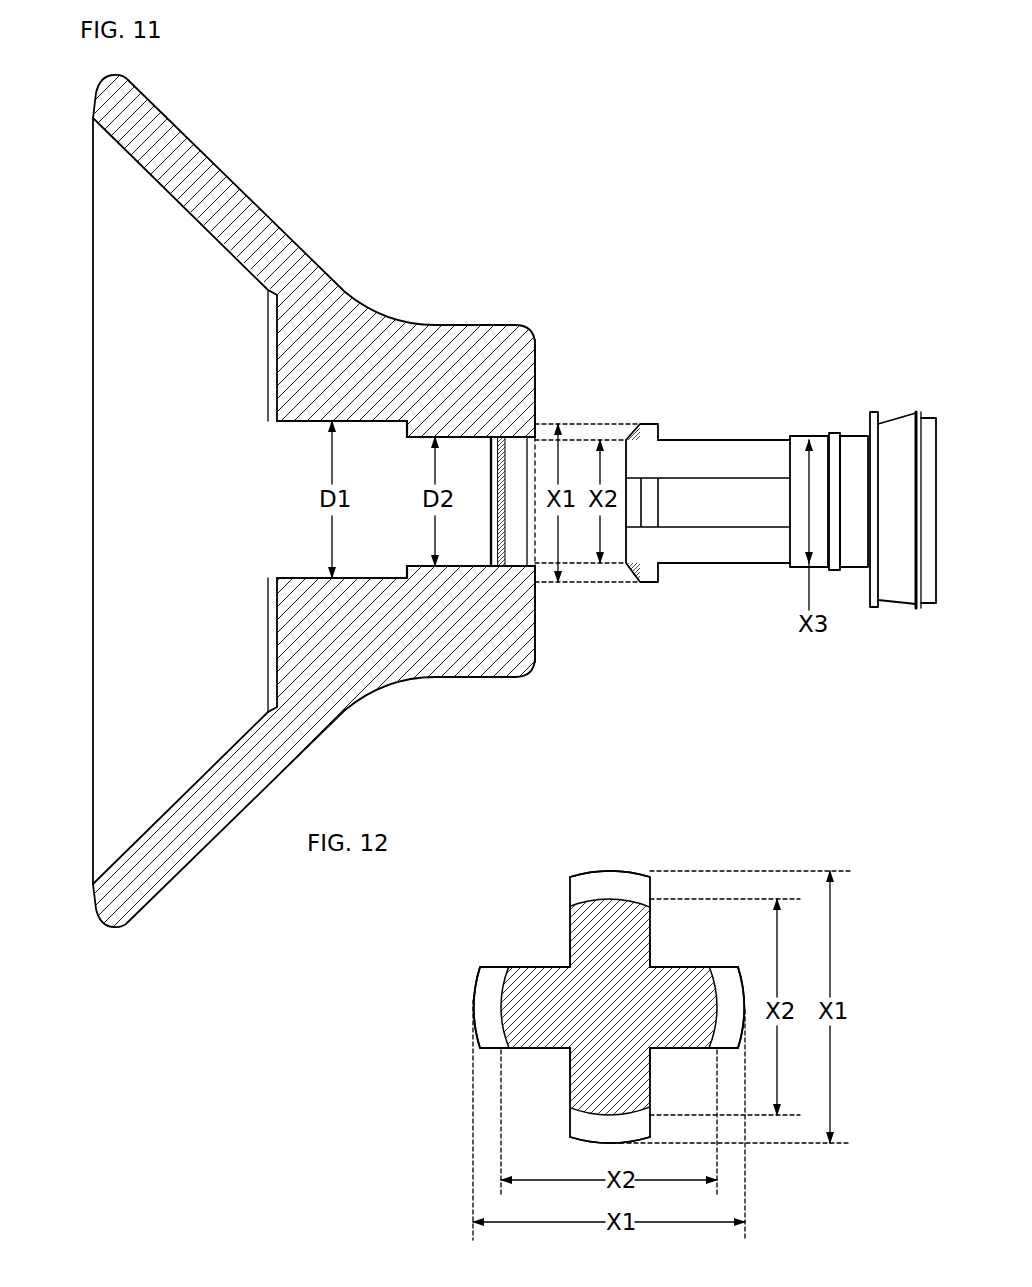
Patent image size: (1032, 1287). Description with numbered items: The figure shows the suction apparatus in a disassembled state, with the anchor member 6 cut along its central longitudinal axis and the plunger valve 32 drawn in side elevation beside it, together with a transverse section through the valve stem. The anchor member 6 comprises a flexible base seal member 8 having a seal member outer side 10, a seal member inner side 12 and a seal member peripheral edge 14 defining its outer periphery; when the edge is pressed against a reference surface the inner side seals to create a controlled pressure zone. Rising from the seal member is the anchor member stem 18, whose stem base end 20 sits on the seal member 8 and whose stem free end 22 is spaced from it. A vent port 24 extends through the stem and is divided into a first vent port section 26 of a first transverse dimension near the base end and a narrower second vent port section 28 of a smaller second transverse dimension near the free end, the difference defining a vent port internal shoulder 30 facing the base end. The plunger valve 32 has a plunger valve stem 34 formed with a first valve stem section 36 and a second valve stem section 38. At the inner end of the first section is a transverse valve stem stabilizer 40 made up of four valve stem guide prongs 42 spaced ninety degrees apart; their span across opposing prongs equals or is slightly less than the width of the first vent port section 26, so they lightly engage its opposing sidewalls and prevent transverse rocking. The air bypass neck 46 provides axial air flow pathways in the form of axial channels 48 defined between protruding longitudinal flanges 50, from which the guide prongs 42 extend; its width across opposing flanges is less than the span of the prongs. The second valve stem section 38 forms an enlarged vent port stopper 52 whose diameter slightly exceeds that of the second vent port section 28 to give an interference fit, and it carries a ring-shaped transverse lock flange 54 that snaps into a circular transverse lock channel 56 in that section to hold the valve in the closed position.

In FIG. 11, the anchor member 6 is at (380, 283).
In FIG. 11, the base seal member 8 is at (143, 311).
In FIG. 11, the seal member outer side 10 is at (188, 862).
In FIG. 11, the seal member inner side 12 is at (110, 663).
In FIG. 11, the seal member peripheral edge 14 is at (105, 928).
In FIG. 11, the anchor member stem 18 is at (508, 346).
In FIG. 11, the stem base end 20 is at (276, 385).
In FIG. 11, the stem free end 22 is at (535, 352).
In FIG. 11, the vent port 24 is at (308, 457).
In FIG. 11, the first vent port section 26 is at (325, 580).
In FIG. 11, the second vent port section 28 is at (480, 566).
In FIG. 11, the vent port internal shoulder 30 is at (405, 575).
In FIG. 11, the plunger valve 32 is at (787, 326).
In FIG. 11, the plunger valve stem 34 is at (664, 599).
In FIG. 11, the first valve stem section 36 is at (676, 423).
In FIG. 11, the second valve stem section 38 is at (810, 423).
In FIG. 11, the valve stem stabilizer 40 is at (638, 421).
In FIG. 12, the valve stem stabilizer 40 is at (462, 974).
In FIG. 12, the valve stem guide prongs 42 is at (603, 888).
In FIG. 11, the air bypass neck 46 is at (758, 567).
In FIG. 12, the axial channels 48 is at (663, 926).
In FIG. 12, the longitudinal flanges 50 is at (652, 938).
In FIG. 11, the vent port stopper 52 is at (852, 571).
In FIG. 11, the transverse lock flange 54 is at (836, 423).
In FIG. 11, the transverse lock channel 56 is at (498, 566).